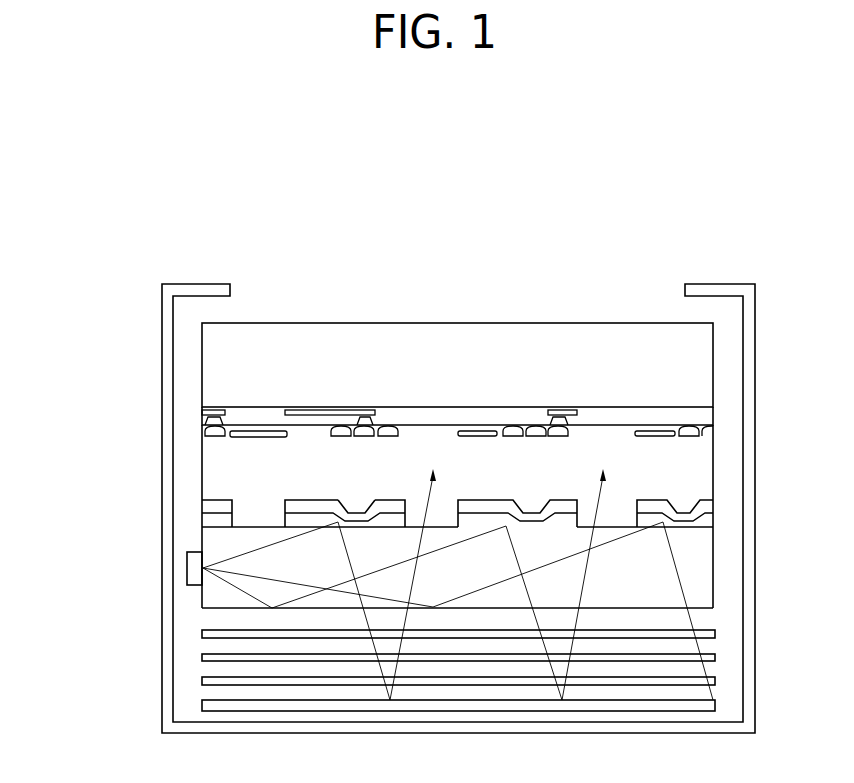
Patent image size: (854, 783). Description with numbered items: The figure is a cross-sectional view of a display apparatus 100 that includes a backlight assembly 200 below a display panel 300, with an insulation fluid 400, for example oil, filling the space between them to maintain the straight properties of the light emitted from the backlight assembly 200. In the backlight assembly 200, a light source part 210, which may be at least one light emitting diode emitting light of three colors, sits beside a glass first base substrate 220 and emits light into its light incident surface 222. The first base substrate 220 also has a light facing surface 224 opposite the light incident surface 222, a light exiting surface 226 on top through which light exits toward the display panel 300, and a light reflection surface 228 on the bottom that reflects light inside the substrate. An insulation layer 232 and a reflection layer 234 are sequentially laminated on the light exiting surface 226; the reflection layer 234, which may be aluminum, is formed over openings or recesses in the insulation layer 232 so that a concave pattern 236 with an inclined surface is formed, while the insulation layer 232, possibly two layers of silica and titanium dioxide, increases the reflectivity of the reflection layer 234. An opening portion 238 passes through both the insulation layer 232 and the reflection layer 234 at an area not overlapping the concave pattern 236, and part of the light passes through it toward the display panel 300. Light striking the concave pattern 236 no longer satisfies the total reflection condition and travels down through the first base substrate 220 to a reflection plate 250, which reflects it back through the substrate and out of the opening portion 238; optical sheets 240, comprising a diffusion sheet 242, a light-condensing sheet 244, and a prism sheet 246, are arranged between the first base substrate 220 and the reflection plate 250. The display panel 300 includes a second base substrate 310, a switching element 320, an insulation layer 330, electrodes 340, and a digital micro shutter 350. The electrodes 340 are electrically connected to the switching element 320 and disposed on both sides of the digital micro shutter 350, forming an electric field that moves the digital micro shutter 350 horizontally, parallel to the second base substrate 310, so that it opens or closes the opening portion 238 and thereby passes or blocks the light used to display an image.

The display apparatus 100 is at (442, 196).
The display panel 300 is at (57, 327).
The second base substrate 310 is at (202, 333).
The switching element 320 is at (202, 408).
The insulation layer 330 is at (233, 412).
The electrodes 340 is at (203, 426).
The digital micro shutter 350 is at (265, 431).
The insulation fluid 400 is at (205, 467).
The backlight assembly 200 is at (58, 712).
The light source part 210 is at (190, 567).
The first base substrate 220 is at (222, 603).
The light incident surface 222 is at (202, 601).
The light facing surface 224 is at (715, 562).
The light exiting surface 226 is at (248, 527).
The light reflection surface 228 is at (702, 607).
The insulation layer 232 is at (202, 519).
The reflection layer 234 is at (202, 502).
The concave pattern 236 is at (357, 503).
The opening portion 238 is at (262, 503).
The optical sheets 240 is at (105, 623).
The diffusion sheet 242 is at (202, 680).
The light-condensing sheet 244 is at (202, 657).
The prism sheet 246 is at (202, 634).
The reflection plate 250 is at (202, 705).